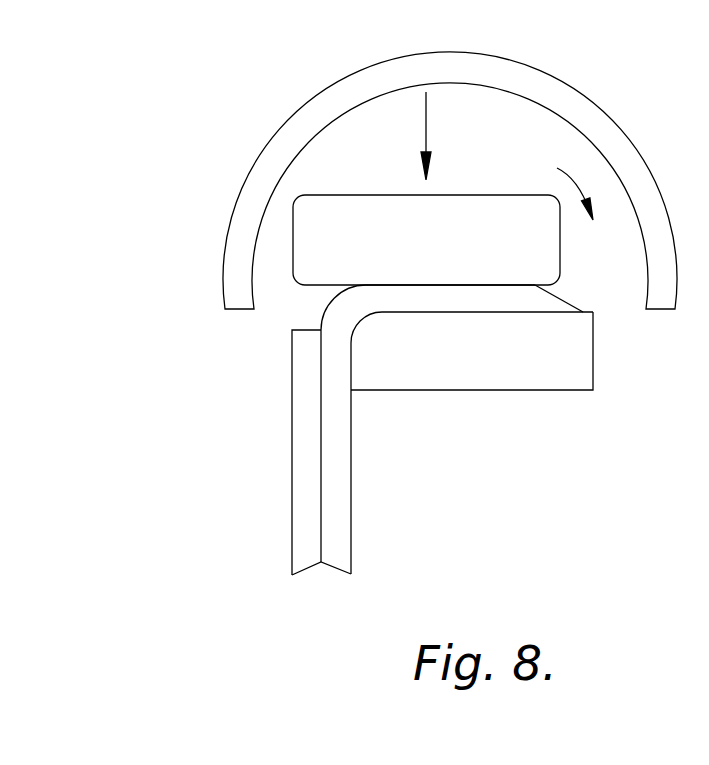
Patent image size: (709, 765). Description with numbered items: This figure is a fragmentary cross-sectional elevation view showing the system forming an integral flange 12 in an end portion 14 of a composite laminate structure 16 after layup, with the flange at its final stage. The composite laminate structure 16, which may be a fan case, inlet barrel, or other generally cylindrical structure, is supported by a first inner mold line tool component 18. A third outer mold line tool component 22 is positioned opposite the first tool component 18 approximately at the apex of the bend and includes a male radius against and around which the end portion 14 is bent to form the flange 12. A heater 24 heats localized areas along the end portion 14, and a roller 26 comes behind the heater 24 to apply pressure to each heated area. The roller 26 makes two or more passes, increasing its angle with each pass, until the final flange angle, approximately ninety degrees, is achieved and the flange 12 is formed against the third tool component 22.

The integral flange 12 is at (468, 296).
The end portion 14 is at (397, 298).
The composite laminate structure 16 is at (337, 506).
The first inner mold line tool component 18 is at (302, 442).
The third outer mold line tool component 22 is at (532, 373).
The heater 24 is at (585, 120).
The roller 26 is at (382, 213).